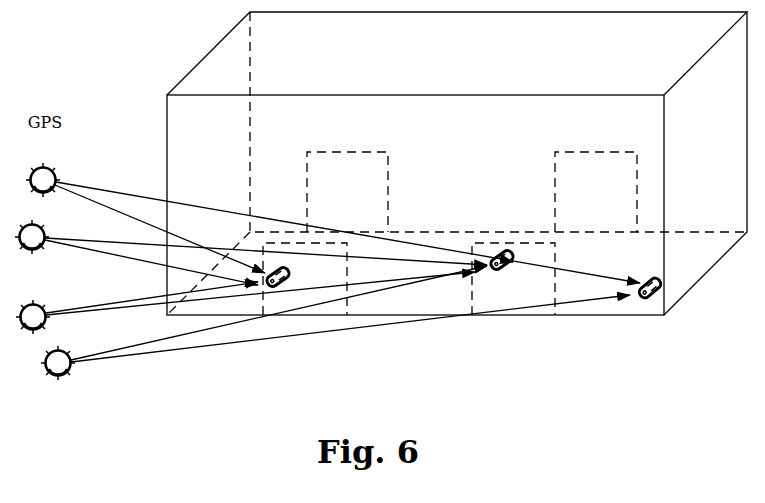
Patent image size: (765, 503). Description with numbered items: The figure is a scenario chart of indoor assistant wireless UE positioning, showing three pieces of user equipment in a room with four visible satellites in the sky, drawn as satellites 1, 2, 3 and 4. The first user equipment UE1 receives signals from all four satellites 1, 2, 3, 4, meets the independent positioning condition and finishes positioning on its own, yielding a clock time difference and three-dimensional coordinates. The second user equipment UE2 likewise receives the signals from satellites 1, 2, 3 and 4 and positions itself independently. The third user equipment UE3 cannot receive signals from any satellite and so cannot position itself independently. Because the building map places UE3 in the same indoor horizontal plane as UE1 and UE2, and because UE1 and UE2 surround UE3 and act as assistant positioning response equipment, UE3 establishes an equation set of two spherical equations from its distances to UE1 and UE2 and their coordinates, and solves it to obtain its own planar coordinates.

The satellite GPS1 1 is at (323, 216).
The satellite GPS2 2 is at (243, 252).
The satellite GPS3 3 is at (239, 303).
The satellite GPS4 4 is at (324, 323).
The element UE1 is at (299, 268).
The element UE2 is at (497, 233).
The element UE3 is at (668, 276).